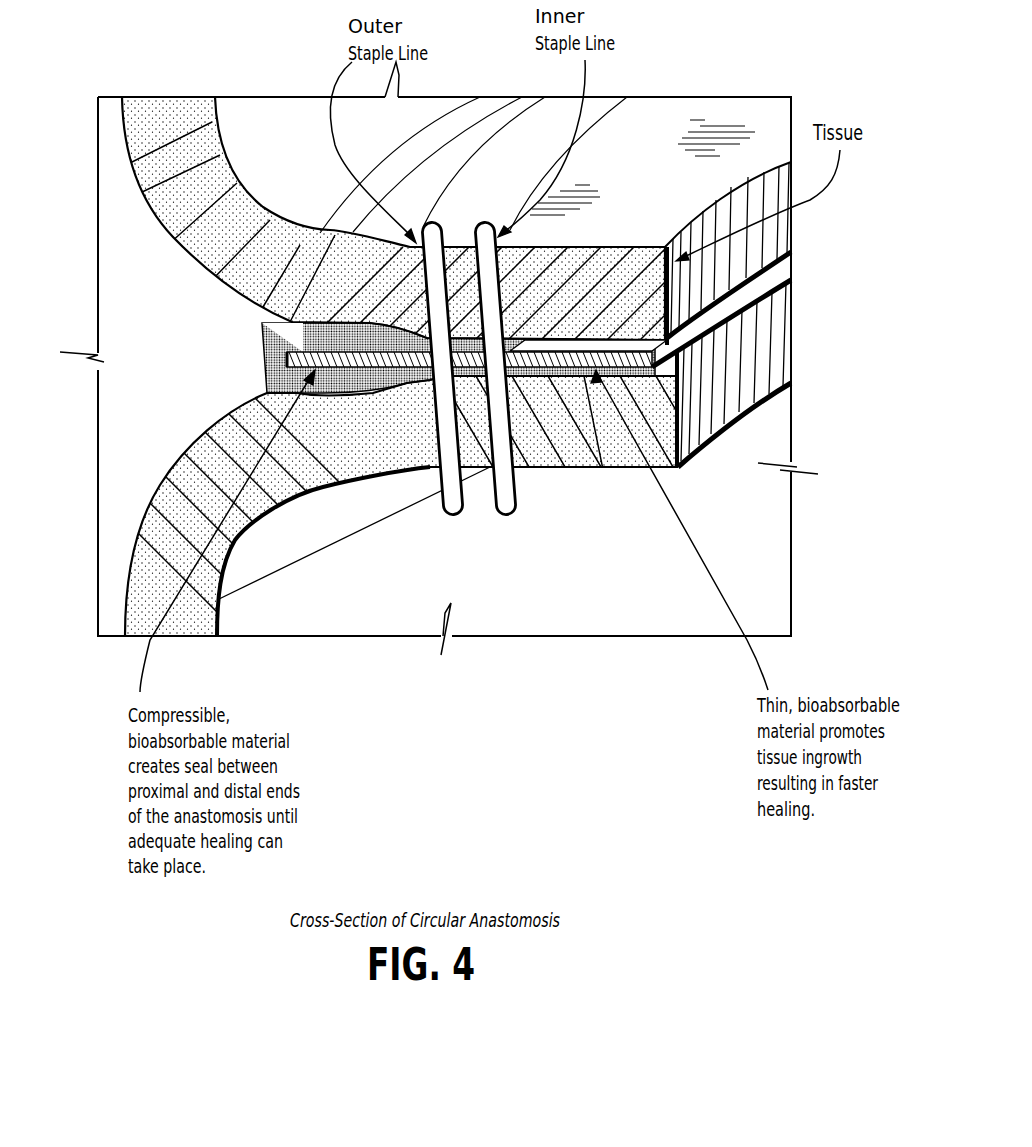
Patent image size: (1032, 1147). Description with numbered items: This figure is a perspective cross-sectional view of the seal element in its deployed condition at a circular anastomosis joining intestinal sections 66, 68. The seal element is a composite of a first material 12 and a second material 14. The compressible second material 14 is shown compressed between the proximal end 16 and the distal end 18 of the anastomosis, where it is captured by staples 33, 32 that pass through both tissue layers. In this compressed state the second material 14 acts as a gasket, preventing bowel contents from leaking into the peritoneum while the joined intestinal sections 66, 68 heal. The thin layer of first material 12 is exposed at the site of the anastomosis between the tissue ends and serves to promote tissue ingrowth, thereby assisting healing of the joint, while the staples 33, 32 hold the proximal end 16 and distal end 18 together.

The first material 12 is at (673, 350).
The second material 14 is at (303, 352).
The proximal end 16 is at (690, 302).
The distal end 18 is at (680, 417).
The staple 32 is at (517, 506).
The staple 33 is at (447, 507).
The intestinal section 66 is at (292, 262).
The intestinal section 68 is at (290, 493).